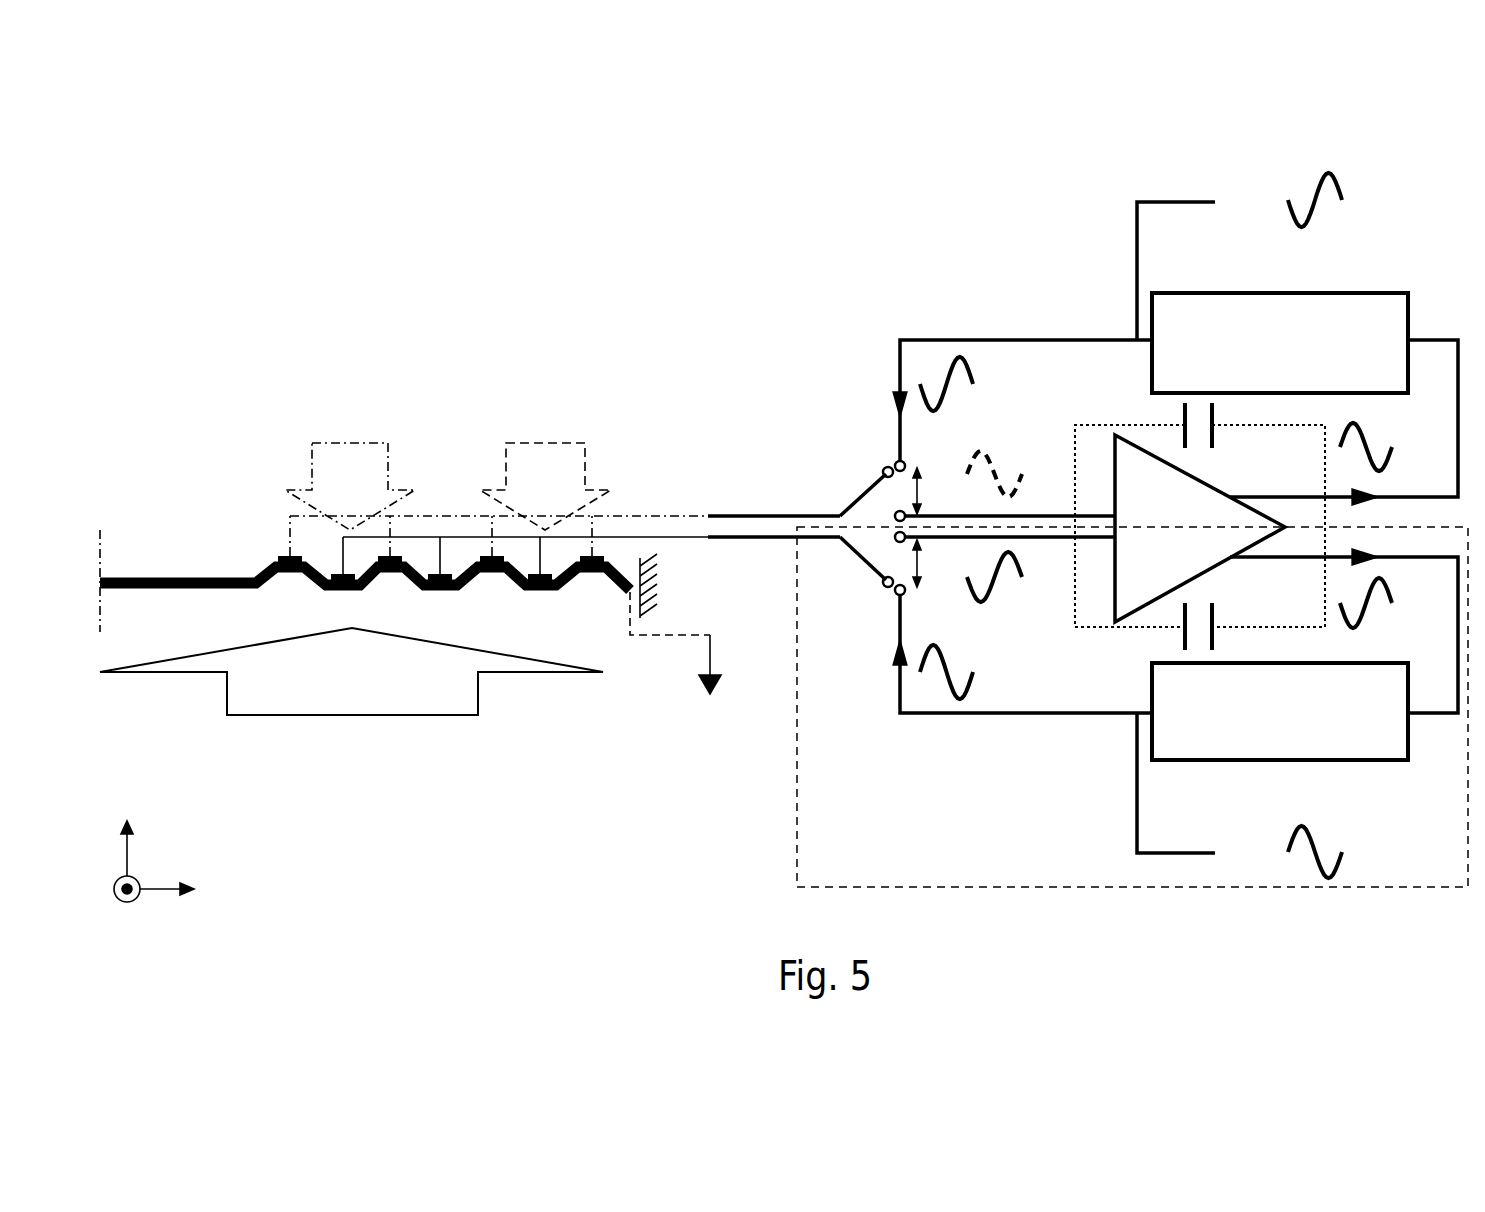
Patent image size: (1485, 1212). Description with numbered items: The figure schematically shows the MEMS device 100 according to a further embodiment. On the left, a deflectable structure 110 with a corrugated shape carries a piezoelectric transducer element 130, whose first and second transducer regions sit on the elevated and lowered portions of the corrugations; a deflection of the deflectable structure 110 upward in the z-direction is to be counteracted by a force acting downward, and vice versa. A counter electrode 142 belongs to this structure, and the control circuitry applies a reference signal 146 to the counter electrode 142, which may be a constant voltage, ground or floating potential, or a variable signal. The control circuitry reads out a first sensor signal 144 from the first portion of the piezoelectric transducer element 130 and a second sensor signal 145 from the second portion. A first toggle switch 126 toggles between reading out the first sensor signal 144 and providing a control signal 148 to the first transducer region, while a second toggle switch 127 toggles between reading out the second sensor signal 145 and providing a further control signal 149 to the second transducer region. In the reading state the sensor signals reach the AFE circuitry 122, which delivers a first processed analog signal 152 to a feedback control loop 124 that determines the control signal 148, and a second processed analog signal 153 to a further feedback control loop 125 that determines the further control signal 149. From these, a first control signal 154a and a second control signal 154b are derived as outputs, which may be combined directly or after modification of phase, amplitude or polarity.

The MEMS device 100 is at (277, 158).
The deflectable structure 110 is at (378, 506).
The piezoelectric transducer element 130 is at (300, 370).
The counter electrode 142 is at (455, 590).
The reference signal 146 is at (672, 636).
The first toggle switch 126 is at (870, 490).
The second toggle switch 127 is at (870, 568).
The control signal 148 is at (1017, 340).
The further control signal 149 is at (1016, 714).
The first sensor signal 144 is at (1040, 515).
The second sensor signal 145 is at (1050, 539).
The AFE circuitry 122 is at (1211, 484).
The feedback control loop 124 is at (1330, 293).
The further feedback control loop 125 is at (1347, 762).
The first processed analog signal 152 is at (1418, 340).
The second processed analog signal 153 is at (1412, 718).
The first control signal 154a is at (1165, 201).
The second control signal 154b is at (1177, 856).